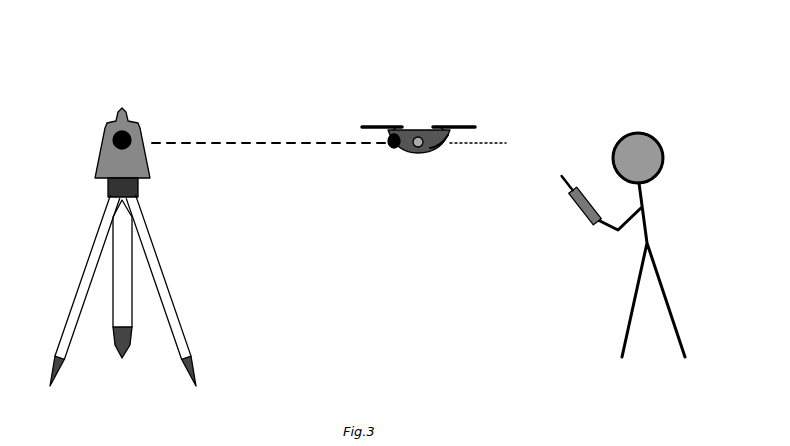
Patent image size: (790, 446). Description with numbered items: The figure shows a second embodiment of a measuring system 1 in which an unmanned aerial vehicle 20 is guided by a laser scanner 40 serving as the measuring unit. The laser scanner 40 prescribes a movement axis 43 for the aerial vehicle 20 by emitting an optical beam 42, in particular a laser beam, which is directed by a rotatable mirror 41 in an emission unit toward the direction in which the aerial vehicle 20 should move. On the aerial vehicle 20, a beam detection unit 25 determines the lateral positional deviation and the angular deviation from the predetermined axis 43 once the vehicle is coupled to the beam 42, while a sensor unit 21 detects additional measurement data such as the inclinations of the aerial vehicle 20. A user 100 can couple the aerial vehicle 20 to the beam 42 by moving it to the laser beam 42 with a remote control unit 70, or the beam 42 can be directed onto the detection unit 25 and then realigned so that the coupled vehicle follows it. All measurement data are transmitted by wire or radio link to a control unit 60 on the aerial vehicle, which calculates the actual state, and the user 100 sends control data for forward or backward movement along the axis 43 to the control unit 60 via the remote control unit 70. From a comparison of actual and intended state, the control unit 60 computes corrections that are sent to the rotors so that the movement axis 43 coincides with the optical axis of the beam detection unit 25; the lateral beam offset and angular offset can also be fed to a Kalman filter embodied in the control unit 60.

The measuring system 1 is at (190, 47).
The unmanned aerial vehicle 20 is at (428, 106).
The sensor unit 21 is at (433, 152).
The beam detection unit 25 is at (392, 142).
The laser scanner 40 is at (108, 92).
The rotatable mirror 41 is at (146, 126).
The optical beam 42 is at (253, 143).
The movement axis 43 is at (497, 142).
The control unit 60 is at (412, 150).
The remote control unit 70 is at (582, 218).
The user 100 is at (650, 118).